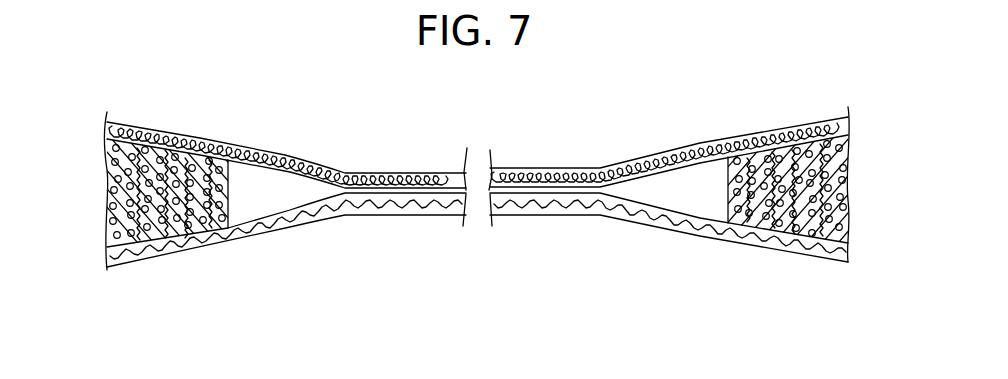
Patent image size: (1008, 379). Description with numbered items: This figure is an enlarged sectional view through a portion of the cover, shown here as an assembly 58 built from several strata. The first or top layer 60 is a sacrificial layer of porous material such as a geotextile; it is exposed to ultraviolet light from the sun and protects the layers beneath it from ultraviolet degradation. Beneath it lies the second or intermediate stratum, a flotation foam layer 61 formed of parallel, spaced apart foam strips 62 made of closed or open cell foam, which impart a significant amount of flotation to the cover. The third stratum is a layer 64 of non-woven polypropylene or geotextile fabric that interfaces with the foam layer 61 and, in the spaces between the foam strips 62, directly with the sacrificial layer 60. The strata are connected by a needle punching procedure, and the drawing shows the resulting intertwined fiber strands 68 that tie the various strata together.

The vascular graft 58 is at (692, 118).
The top layer 60 is at (268, 152).
The flotation foam layer 61 is at (728, 188).
The foam strips 62 is at (740, 217).
The layer of non-woven polypropylene fabric 64 is at (264, 238).
The intertwined fiber strands 68 is at (110, 217).